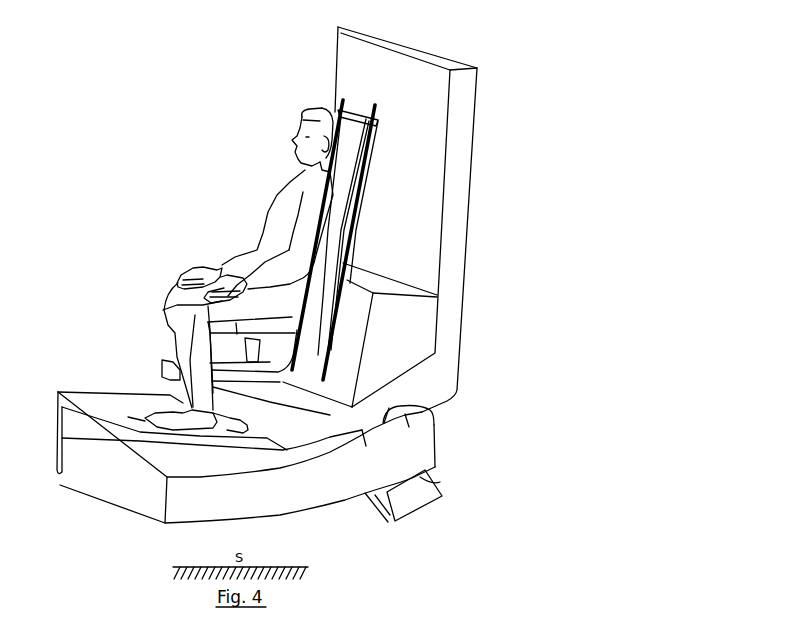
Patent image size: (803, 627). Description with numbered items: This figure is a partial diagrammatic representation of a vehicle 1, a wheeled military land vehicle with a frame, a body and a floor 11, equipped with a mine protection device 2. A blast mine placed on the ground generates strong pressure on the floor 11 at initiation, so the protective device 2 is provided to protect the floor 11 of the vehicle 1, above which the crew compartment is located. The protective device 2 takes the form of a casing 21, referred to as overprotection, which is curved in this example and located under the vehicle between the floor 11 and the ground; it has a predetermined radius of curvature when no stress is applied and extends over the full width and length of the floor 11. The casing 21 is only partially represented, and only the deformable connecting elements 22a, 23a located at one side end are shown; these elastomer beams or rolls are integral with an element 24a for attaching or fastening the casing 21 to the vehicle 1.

The vehicle 1 is at (103, 382).
The mine protection device 2 is at (441, 439).
The floor 11 is at (107, 417).
The casing 21 is at (177, 500).
The connecting element 22a is at (422, 404).
The connecting element 23a is at (421, 482).
The attaching element 24a is at (418, 503).